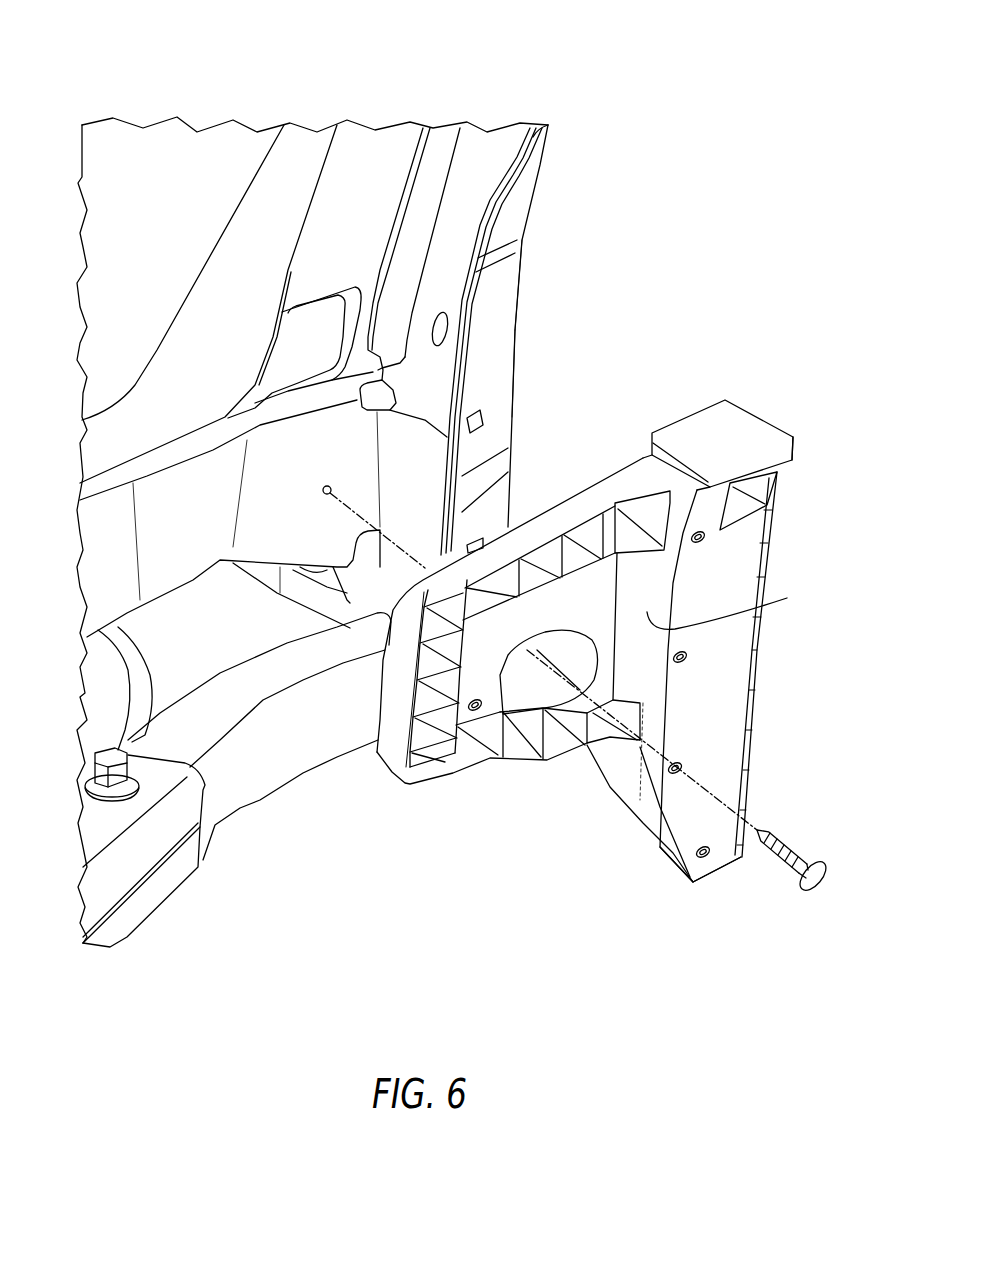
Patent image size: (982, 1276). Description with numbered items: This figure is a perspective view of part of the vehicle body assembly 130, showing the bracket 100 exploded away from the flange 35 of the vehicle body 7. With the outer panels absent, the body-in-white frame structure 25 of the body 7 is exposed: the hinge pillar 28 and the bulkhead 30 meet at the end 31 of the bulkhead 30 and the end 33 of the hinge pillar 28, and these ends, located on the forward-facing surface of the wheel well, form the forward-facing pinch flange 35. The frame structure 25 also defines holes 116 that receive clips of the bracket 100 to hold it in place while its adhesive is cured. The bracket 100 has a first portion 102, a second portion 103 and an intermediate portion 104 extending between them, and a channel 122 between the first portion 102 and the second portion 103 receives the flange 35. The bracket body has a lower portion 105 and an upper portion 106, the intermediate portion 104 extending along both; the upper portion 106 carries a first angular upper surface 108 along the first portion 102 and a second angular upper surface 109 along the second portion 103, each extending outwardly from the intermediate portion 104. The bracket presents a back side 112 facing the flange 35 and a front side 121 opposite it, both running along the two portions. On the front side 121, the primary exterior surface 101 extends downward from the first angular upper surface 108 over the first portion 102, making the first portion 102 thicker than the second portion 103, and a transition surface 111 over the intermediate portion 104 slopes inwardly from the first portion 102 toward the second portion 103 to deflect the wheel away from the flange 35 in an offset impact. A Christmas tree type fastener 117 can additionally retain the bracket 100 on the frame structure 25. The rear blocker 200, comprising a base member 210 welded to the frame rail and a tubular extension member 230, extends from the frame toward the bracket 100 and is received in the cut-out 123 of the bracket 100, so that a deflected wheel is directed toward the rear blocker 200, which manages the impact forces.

The vehicle body 7 is at (535, 258).
The body-in-white frame structure 25 is at (549, 297).
The hinge pillar 28 is at (520, 204).
The bulkhead 30 is at (362, 155).
The end of bulkhead 31 is at (490, 155).
The end of hinge pillar 33 is at (548, 126).
The flange 35 is at (495, 306).
The bracket 100 is at (755, 383).
The primary exterior surface 101 is at (710, 718).
The first portion 102 is at (720, 390).
The second portion 103 is at (480, 786).
The intermediate portion 104 is at (638, 447).
The lower portion 105 is at (691, 900).
The upper portion 106 is at (802, 442).
The first angular upper surface 108 is at (740, 452).
The second angular upper surface 109 is at (583, 513).
The transition surface 111 is at (787, 598).
The back side 112 is at (600, 477).
The holes 116 is at (484, 419).
The fastener 117 is at (802, 895).
The front side 121 is at (592, 813).
The channel 122 is at (664, 456).
The cut-out 123 is at (523, 840).
The vehicle body assembly 130 is at (528, 920).
The rear blocker 200 is at (227, 797).
The base member 210 is at (122, 873).
The extension member 230 is at (316, 733).